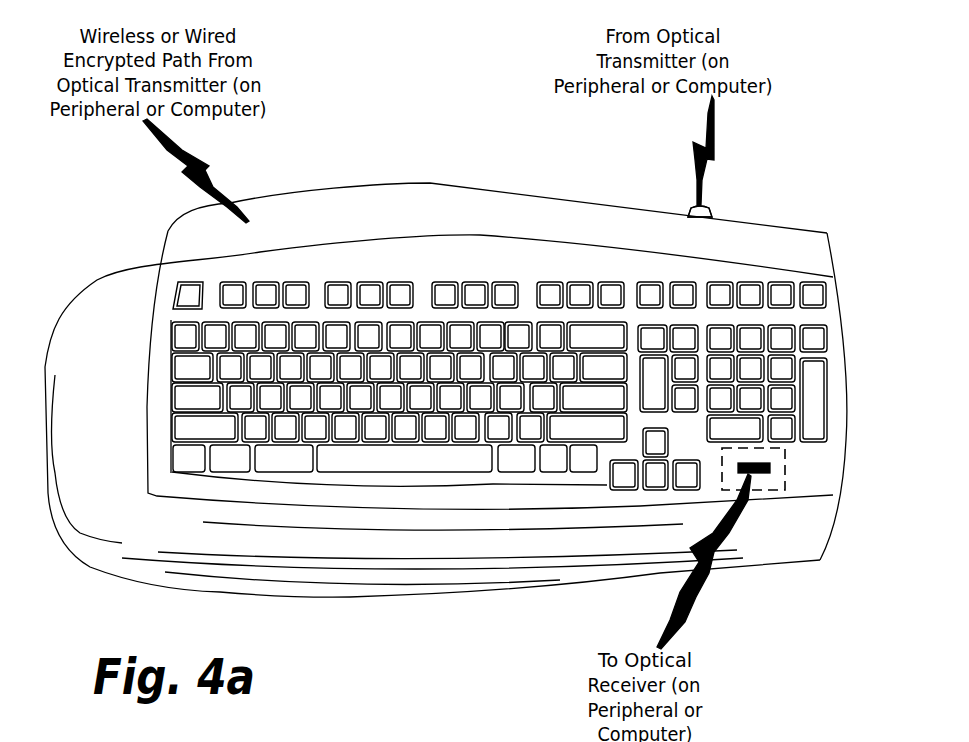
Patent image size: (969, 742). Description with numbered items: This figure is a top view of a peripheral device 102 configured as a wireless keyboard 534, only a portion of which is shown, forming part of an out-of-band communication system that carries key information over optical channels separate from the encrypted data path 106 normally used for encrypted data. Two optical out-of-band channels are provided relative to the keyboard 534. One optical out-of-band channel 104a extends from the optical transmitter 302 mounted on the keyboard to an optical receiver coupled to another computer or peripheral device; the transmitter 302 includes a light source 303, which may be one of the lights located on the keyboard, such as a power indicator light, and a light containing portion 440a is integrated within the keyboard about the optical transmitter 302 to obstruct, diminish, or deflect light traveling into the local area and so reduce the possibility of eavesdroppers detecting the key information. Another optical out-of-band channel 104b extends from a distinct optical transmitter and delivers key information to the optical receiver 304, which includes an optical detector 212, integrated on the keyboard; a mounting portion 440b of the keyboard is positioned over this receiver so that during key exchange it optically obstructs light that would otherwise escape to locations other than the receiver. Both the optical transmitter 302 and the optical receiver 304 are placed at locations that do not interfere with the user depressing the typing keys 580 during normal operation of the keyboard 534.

The encrypted data path 106 is at (198, 158).
The wireless keyboard 534 is at (428, 184).
The peripheral device 102 is at (446, 376).
The typing keys 580 is at (442, 291).
The optical out-of-band channel 104b is at (694, 152).
The optical detector 212 is at (703, 203).
The optical receiver 304 is at (765, 172).
The mounting portion 440b is at (708, 208).
The optical out-of-band channel 104a is at (661, 640).
The light source 303 is at (746, 477).
The optical transmitter 302 is at (812, 522).
The light containing portion 440a is at (745, 477).